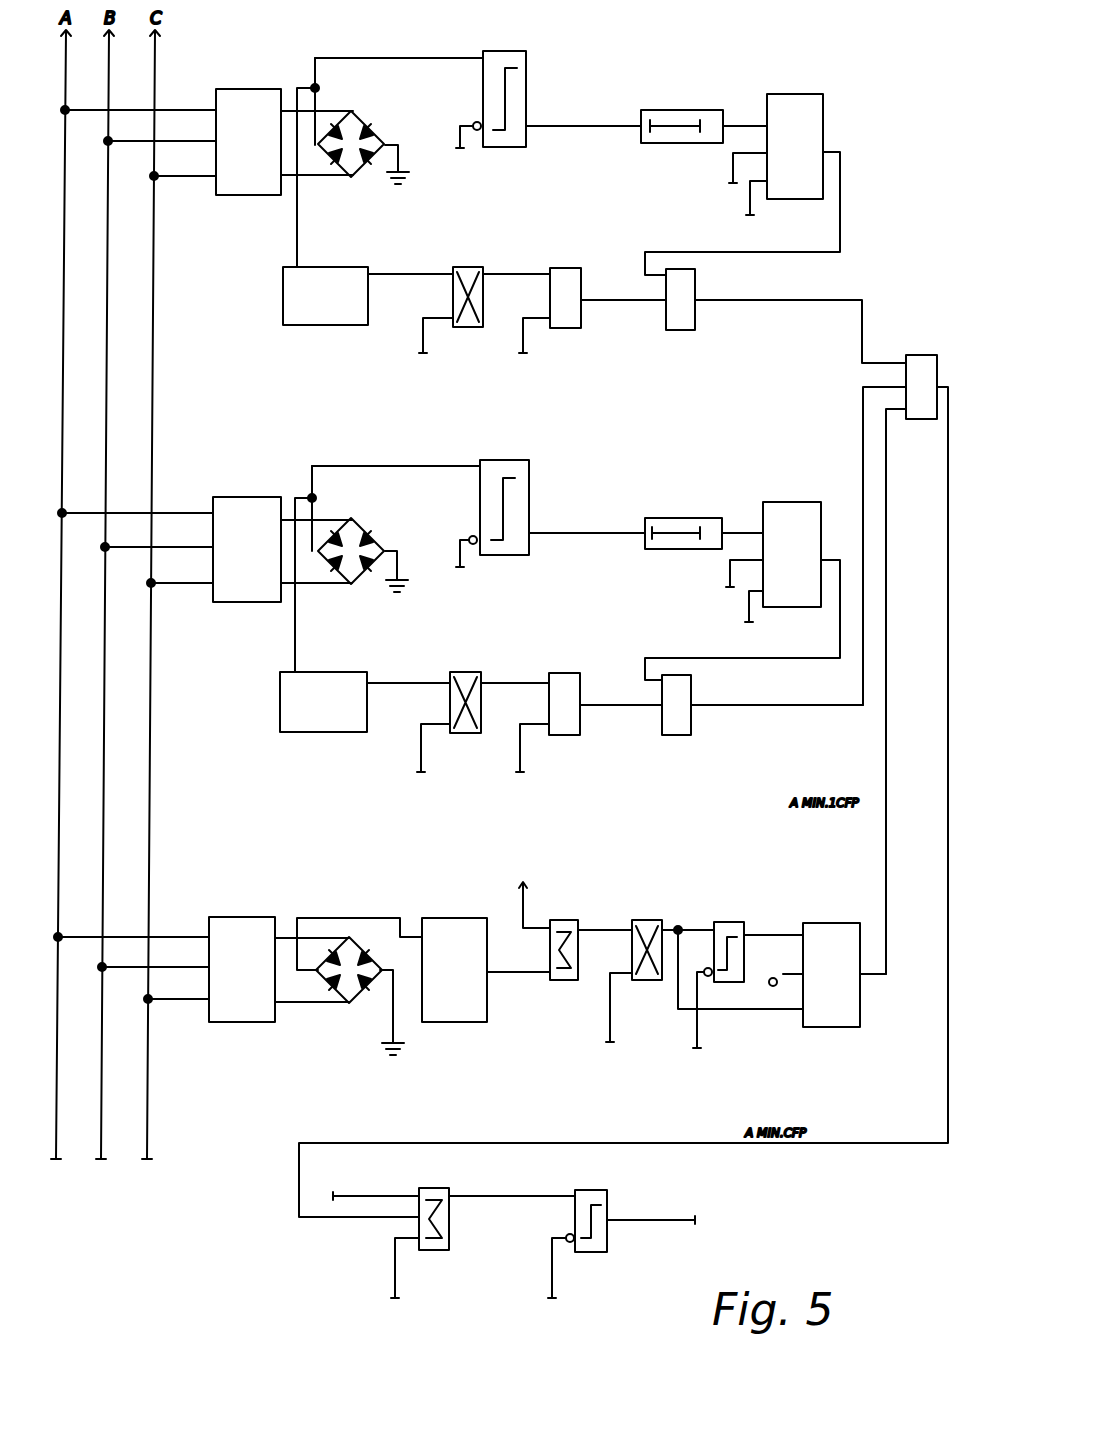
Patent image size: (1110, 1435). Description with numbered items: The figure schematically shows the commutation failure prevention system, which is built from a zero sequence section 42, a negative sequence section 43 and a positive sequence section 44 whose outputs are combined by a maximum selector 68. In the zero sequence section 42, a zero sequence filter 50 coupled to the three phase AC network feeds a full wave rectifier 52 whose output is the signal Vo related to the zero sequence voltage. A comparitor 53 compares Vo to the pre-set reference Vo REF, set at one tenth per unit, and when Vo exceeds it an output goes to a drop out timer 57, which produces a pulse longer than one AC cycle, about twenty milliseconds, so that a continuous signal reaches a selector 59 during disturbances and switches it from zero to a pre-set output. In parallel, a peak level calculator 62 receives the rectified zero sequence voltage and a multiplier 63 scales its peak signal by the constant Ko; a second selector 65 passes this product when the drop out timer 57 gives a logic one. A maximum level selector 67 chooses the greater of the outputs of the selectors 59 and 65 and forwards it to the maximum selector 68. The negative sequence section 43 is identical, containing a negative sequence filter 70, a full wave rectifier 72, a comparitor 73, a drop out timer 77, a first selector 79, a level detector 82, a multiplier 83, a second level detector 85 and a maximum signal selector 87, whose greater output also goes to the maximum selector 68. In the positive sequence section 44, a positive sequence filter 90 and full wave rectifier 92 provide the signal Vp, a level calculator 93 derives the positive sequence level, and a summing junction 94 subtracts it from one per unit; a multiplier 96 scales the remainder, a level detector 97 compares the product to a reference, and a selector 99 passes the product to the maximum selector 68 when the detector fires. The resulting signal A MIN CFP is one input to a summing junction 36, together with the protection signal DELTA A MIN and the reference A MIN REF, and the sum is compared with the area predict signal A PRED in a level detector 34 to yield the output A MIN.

The zero sequence section 42 is at (219, 271).
The negative sequence section 43 is at (222, 659).
The positive sequence section 44 is at (550, 1065).
The zero sequence filter 50 is at (233, 196).
The full wave rectifier 52 is at (360, 152).
The comparitor 53 is at (510, 50).
The drop out timer 57 is at (674, 108).
The selector 59 is at (815, 93).
The peak level calculator 62 is at (318, 330).
The multiplier 63 is at (451, 290).
The second selector 65 is at (548, 288).
The maximum level selector 67 is at (662, 318).
The maximum selector 68 is at (928, 338).
The negative sequence filter 70 is at (227, 496).
The full wave rectifier 72 is at (360, 559).
The comparitor 73 is at (529, 458).
The drop out timer 77 is at (704, 502).
The first selector 79 is at (800, 484).
The level detector 82 is at (280, 700).
The multiplier 83 is at (448, 698).
The second level detector 85 is at (548, 698).
The maximum signal selector 87 is at (660, 727).
The positive sequence filter 90 is at (258, 916).
The full wave rectifier 92 is at (358, 978).
The level calculator 93 is at (455, 917).
The summing junction 94 is at (572, 918).
The multiplier 96 is at (652, 918).
The level detector 97 is at (738, 920).
The selector 99 is at (808, 1028).
The summing junction 36 is at (440, 1186).
The level detector 34 is at (598, 1188).